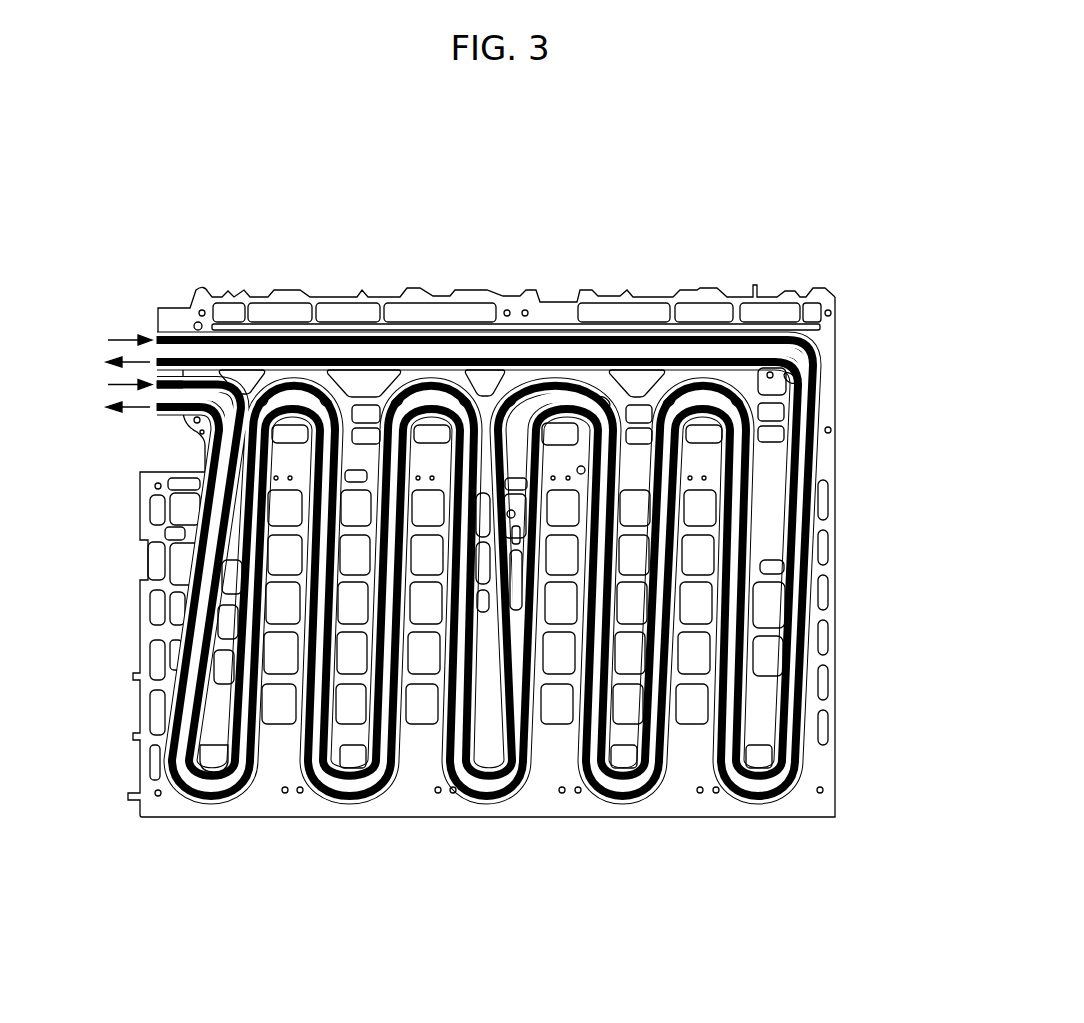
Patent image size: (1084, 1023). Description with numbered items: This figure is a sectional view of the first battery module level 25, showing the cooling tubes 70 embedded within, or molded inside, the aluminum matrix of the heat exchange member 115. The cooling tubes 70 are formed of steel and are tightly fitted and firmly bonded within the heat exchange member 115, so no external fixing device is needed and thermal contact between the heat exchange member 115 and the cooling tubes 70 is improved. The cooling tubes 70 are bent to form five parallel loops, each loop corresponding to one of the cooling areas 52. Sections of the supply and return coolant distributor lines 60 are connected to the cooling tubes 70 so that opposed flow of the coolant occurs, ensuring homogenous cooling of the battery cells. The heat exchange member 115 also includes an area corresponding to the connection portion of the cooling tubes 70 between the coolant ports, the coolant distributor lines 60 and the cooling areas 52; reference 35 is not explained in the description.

The first battery module level 25 is at (610, 268).
The plate body 35 is at (850, 406).
The coolant distributor lines 60 is at (163, 330).
The cooling tubes 70 is at (490, 790).
The heat exchange member 115 is at (769, 681).
The cooling areas 52 is at (221, 722).